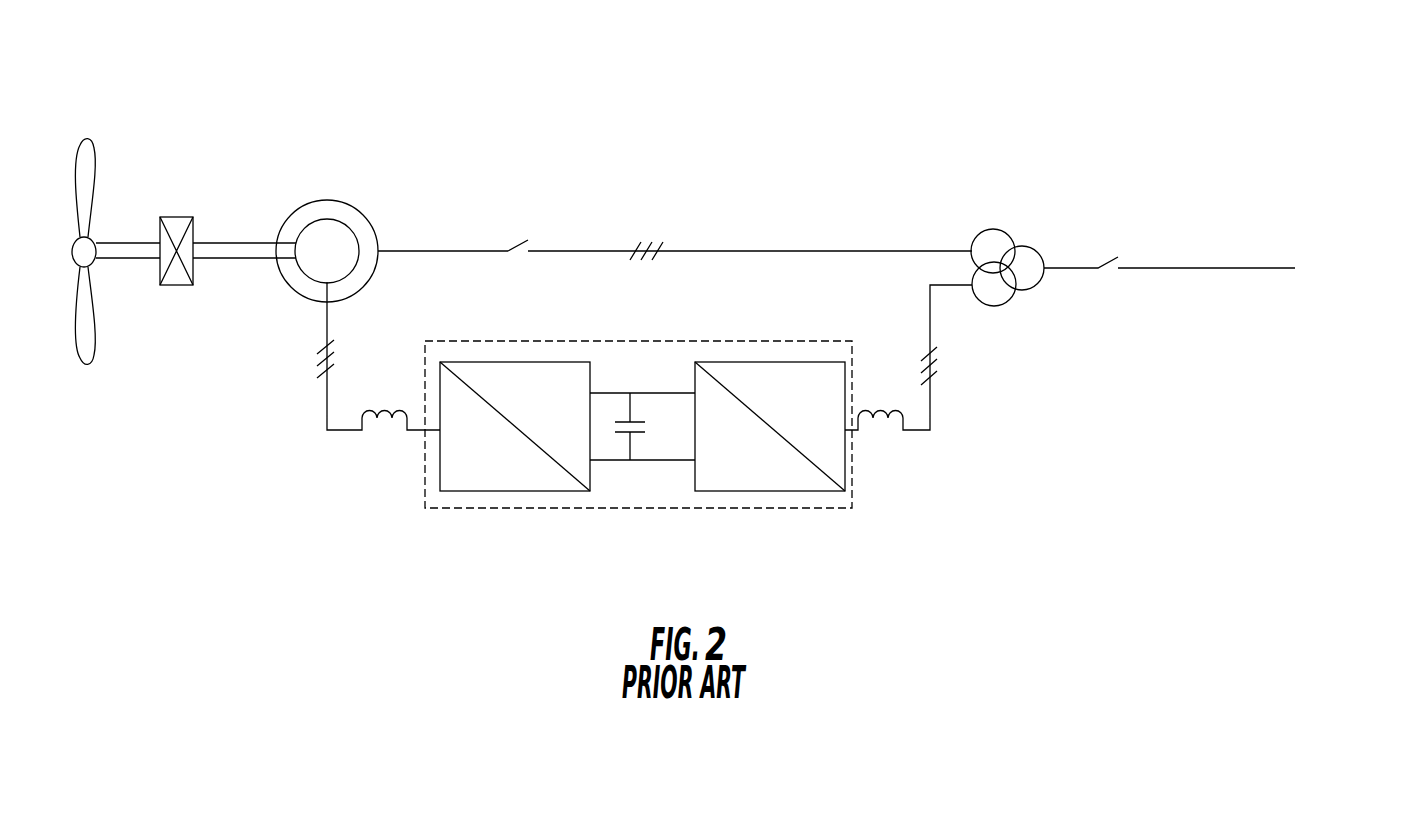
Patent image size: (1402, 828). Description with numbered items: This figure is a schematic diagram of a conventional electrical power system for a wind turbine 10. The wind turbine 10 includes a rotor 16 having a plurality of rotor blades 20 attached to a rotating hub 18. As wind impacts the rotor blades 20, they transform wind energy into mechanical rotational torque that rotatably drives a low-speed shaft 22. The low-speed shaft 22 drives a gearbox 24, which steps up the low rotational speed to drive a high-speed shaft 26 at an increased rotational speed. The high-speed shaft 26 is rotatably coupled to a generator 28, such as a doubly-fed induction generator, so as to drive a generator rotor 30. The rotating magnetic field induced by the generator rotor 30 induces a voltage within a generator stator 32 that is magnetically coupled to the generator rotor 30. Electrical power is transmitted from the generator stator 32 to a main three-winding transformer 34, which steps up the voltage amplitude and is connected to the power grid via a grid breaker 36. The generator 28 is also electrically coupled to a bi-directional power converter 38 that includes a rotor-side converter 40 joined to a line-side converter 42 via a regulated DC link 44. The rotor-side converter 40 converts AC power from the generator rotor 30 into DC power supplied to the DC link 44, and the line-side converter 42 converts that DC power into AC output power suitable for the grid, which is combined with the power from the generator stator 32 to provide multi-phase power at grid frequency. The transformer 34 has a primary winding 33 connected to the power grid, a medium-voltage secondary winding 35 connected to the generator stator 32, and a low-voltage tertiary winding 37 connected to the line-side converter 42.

The wind turbine 10 is at (90, 110).
The rotor 16 is at (56, 258).
The rotating hub 18 is at (72, 258).
The rotor blades 20 is at (87, 173).
The low-speed shaft 22 is at (112, 250).
The gearbox 24 is at (173, 217).
The high-speed shaft 26 is at (208, 253).
The generator 28 is at (324, 188).
The generator rotor 30 is at (352, 230).
The generator stator 32 is at (312, 300).
The primary winding 33 is at (1028, 292).
The three-winding transformer 34 is at (1021, 194).
The secondary winding 35 is at (975, 240).
The grid breaker 36 is at (1134, 254).
The tertiary winding 37 is at (1002, 307).
The power converter 38 is at (666, 334).
The rotor-side converter 40 is at (498, 492).
The line-side converter 42 is at (783, 492).
The DC link 44 is at (650, 452).